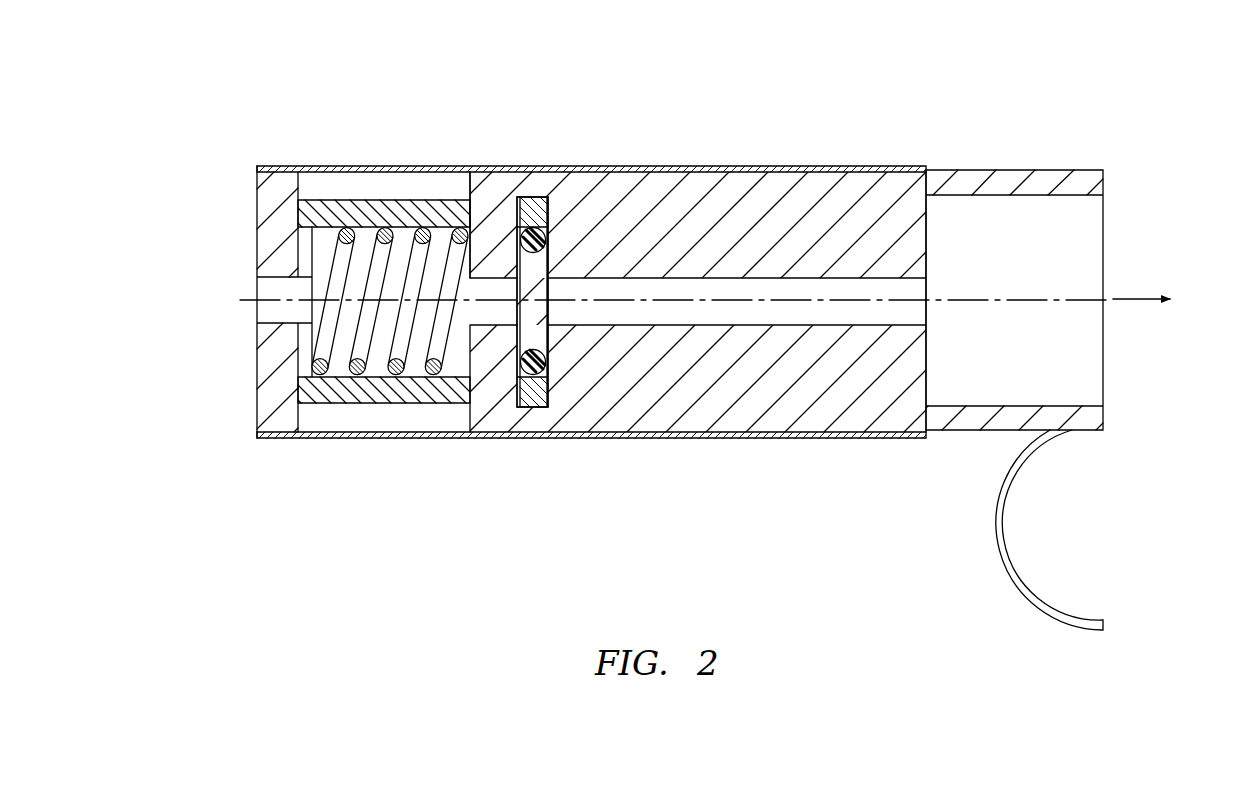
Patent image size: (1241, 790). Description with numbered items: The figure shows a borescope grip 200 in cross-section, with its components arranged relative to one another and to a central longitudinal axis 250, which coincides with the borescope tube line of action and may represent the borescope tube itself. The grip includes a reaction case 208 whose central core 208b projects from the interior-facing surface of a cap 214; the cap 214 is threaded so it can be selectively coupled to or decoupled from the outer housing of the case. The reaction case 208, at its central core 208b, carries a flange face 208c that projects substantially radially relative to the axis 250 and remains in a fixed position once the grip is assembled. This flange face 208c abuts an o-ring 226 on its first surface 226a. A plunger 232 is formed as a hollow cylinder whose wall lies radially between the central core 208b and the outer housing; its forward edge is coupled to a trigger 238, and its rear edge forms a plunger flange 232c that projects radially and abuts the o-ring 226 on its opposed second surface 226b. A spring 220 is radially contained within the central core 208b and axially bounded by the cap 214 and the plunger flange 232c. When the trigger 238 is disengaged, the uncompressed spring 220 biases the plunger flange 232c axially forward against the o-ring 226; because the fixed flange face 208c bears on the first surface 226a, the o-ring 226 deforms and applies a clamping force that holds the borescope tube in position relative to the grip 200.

The borescope grip 200 is at (1158, 134).
The reaction case 208 is at (452, 175).
The central core 208b is at (385, 212).
The flange face 208c is at (549, 210).
The cap 214 is at (277, 390).
The spring 220 is at (362, 373).
The o-ring 226 is at (577, 306).
The first surface of the o-ring 226a is at (550, 304).
The second surface of the o-ring 226b is at (518, 320).
The plunger 232 is at (1007, 183).
The plunger flange 232c is at (483, 347).
The trigger 238 is at (1005, 521).
The central longitudinal axis 250 is at (1137, 297).